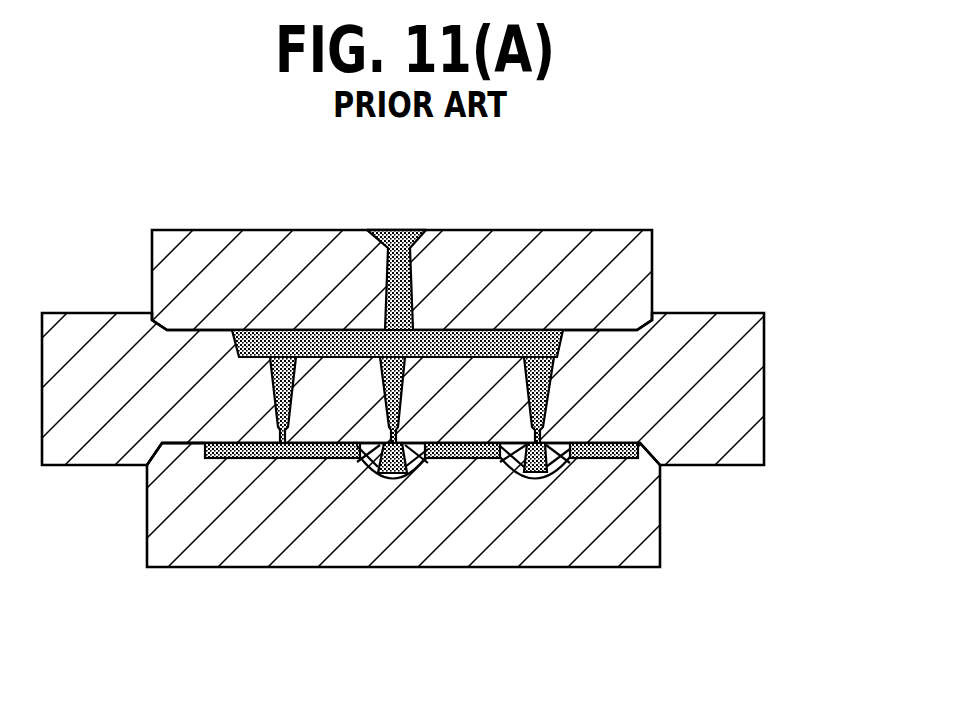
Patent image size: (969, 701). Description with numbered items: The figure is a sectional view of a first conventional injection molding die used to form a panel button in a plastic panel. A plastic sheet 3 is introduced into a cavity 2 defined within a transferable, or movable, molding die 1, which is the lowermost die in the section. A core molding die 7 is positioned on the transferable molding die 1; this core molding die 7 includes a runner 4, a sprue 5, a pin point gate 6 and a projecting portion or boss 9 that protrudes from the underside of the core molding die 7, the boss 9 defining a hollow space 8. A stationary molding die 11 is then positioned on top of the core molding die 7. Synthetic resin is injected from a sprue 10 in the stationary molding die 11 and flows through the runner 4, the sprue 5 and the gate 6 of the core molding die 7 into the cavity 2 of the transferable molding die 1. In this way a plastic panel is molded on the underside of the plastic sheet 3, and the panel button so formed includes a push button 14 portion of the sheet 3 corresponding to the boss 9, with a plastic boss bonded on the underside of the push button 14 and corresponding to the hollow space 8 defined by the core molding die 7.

The transferable molding die 1 is at (525, 578).
The cavity 2 is at (193, 452).
The plastic sheet 3 is at (244, 462).
The runner 4 is at (440, 359).
The sprue 5 is at (268, 374).
The pin point gate 6 is at (274, 440).
The core molding die 7 is at (778, 408).
The hollow space 8 is at (386, 475).
The boss 9 is at (368, 464).
The sprue 10 is at (418, 286).
The stationary molding die 11 is at (548, 228).
The push button 14 is at (424, 464).